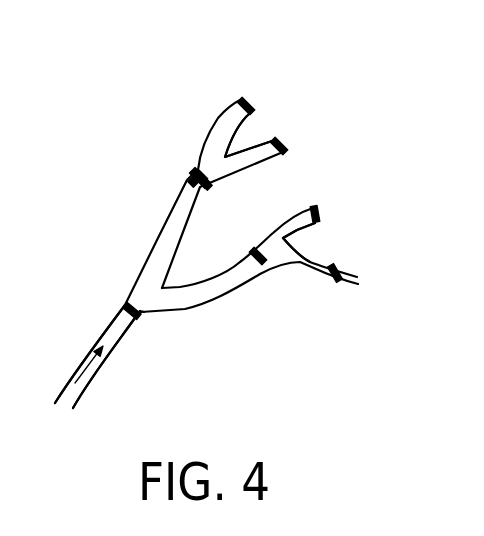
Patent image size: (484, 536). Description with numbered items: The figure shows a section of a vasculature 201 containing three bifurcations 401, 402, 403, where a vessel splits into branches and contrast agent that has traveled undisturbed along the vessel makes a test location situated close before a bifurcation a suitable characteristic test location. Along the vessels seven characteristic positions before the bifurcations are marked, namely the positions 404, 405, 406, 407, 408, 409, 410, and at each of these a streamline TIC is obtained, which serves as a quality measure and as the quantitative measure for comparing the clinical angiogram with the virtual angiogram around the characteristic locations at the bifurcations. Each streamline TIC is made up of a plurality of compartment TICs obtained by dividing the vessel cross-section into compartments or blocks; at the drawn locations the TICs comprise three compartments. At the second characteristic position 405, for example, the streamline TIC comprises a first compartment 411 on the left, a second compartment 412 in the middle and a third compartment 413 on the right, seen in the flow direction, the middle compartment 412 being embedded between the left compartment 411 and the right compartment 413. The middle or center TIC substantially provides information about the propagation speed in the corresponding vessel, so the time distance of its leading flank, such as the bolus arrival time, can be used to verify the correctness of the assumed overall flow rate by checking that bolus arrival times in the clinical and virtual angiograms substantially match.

The vasculature 201 is at (198, 92).
The bifurcation 401 is at (236, 144).
The bifurcation 402 is at (322, 240).
The bifurcation 403 is at (174, 334).
The characteristic position before bifurcation 404 is at (123, 305).
The second characteristic position 405 is at (190, 165).
The characteristic position before bifurcation 406 is at (242, 97).
The characteristic position before bifurcation 407 is at (288, 151).
The characteristic position before bifurcation 408 is at (320, 213).
The characteristic position before bifurcation 409 is at (265, 264).
The characteristic position before bifurcation 410 is at (345, 273).
The first compartment 411 is at (186, 184).
The second compartment 412 is at (209, 179).
The third compartment 413 is at (209, 187).